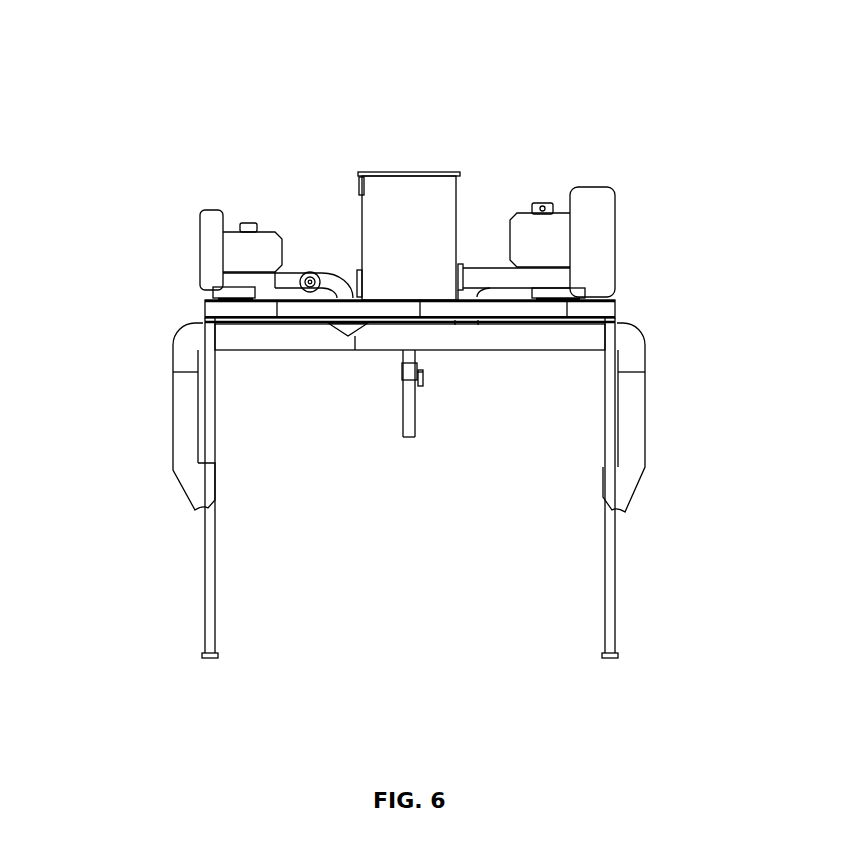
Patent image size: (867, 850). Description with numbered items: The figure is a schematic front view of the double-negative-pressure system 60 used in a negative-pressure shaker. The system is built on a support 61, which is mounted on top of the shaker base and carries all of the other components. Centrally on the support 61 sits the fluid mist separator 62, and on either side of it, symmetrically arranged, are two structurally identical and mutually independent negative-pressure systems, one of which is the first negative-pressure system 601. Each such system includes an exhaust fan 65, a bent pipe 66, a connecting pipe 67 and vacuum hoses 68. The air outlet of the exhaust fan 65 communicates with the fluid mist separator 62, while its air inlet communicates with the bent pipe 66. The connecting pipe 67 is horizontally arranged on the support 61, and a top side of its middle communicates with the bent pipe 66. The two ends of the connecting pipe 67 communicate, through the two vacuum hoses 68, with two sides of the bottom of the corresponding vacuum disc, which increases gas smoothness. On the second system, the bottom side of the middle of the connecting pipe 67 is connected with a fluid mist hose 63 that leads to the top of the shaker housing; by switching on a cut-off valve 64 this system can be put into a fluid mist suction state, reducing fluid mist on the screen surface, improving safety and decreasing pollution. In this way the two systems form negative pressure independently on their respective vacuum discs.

The double-negative-pressure system 60 is at (427, 43).
The first negative-pressure system 601 is at (405, 207).
The support 61 is at (212, 660).
The fluid mist separator 62 is at (413, 167).
The fluid mist hose 63 is at (417, 420).
The cut-off valve 64 is at (402, 372).
The exhaust fan 65 is at (198, 248).
The bent pipe 66 is at (341, 274).
The connecting pipe 67 is at (463, 350).
The vacuum hose 68 is at (172, 420).